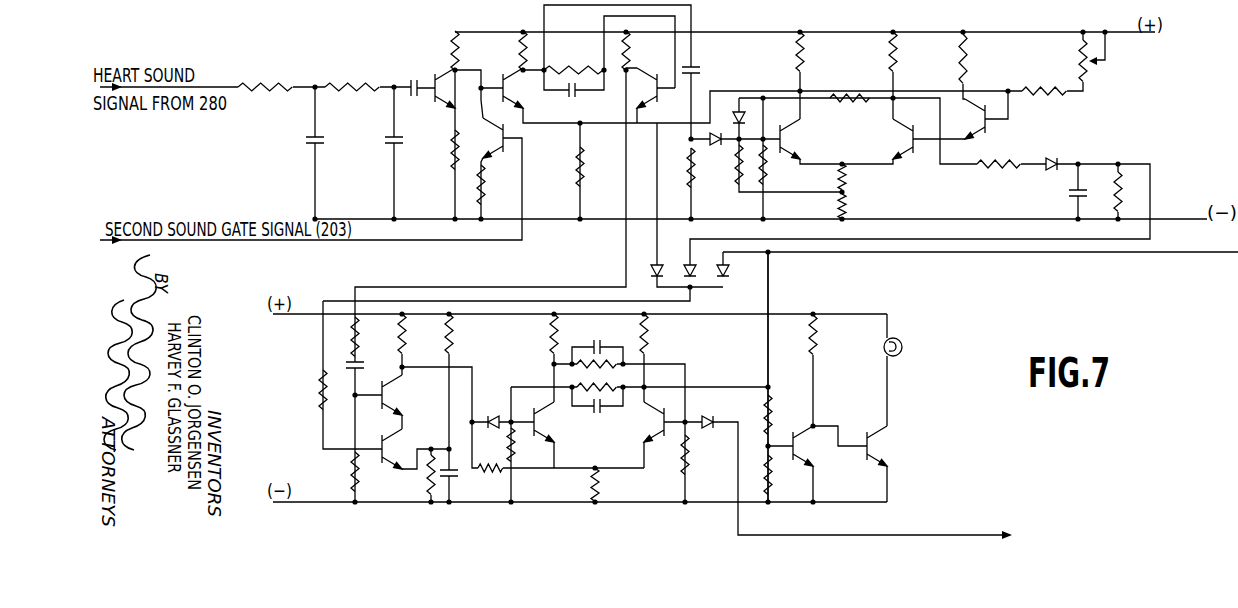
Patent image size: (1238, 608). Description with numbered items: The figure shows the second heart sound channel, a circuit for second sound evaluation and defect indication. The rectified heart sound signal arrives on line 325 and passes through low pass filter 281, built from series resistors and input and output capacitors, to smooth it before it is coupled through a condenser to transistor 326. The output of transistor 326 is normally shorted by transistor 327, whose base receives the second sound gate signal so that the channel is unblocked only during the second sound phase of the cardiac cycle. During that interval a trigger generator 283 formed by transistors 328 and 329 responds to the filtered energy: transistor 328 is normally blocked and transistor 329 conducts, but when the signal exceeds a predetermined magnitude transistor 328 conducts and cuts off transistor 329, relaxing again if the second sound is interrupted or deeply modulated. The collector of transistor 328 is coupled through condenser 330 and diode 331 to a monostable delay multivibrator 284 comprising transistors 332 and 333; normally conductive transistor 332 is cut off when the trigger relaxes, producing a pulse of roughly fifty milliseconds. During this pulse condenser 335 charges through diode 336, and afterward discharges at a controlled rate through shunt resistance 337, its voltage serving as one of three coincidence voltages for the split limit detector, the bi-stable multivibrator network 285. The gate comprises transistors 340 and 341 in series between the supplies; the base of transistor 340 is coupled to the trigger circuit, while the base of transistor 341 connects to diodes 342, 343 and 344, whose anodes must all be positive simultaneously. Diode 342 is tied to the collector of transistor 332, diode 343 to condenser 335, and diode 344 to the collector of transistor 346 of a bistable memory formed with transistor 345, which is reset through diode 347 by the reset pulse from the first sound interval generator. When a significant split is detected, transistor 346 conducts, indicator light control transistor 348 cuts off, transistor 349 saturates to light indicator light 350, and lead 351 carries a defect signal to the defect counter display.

The low pass filter 281 is at (359, 184).
The trigger generator 283 is at (523, 251).
The monostable delay multivibrator 284 is at (920, 111).
The bi-stable multivibrator network 285 is at (290, 380).
The line 325 is at (218, 87).
The transistor 326 is at (434, 77).
The transistor 327 is at (506, 144).
The transistor 328 is at (503, 74).
The transistor 329 is at (658, 91).
The condenser 330 is at (702, 70).
The diode 331 is at (715, 148).
The transistor 332 is at (788, 138).
The transistor 333 is at (890, 136).
The condenser 335 is at (1067, 197).
The diode 336 is at (1060, 157).
The resistance 337 is at (1125, 196).
The transistor 340 is at (389, 396).
The transistor 341 is at (393, 444).
The diode 342 is at (650, 267).
The diode 343 is at (683, 267).
The diode 344 is at (746, 273).
The transistor 345 is at (545, 425).
The transistor 346 is at (652, 427).
The diode 347 is at (708, 417).
The indicator light control transistor 348 is at (800, 460).
The transistor 349 is at (878, 452).
The indicator light 350 is at (898, 354).
The lead 351 is at (877, 253).